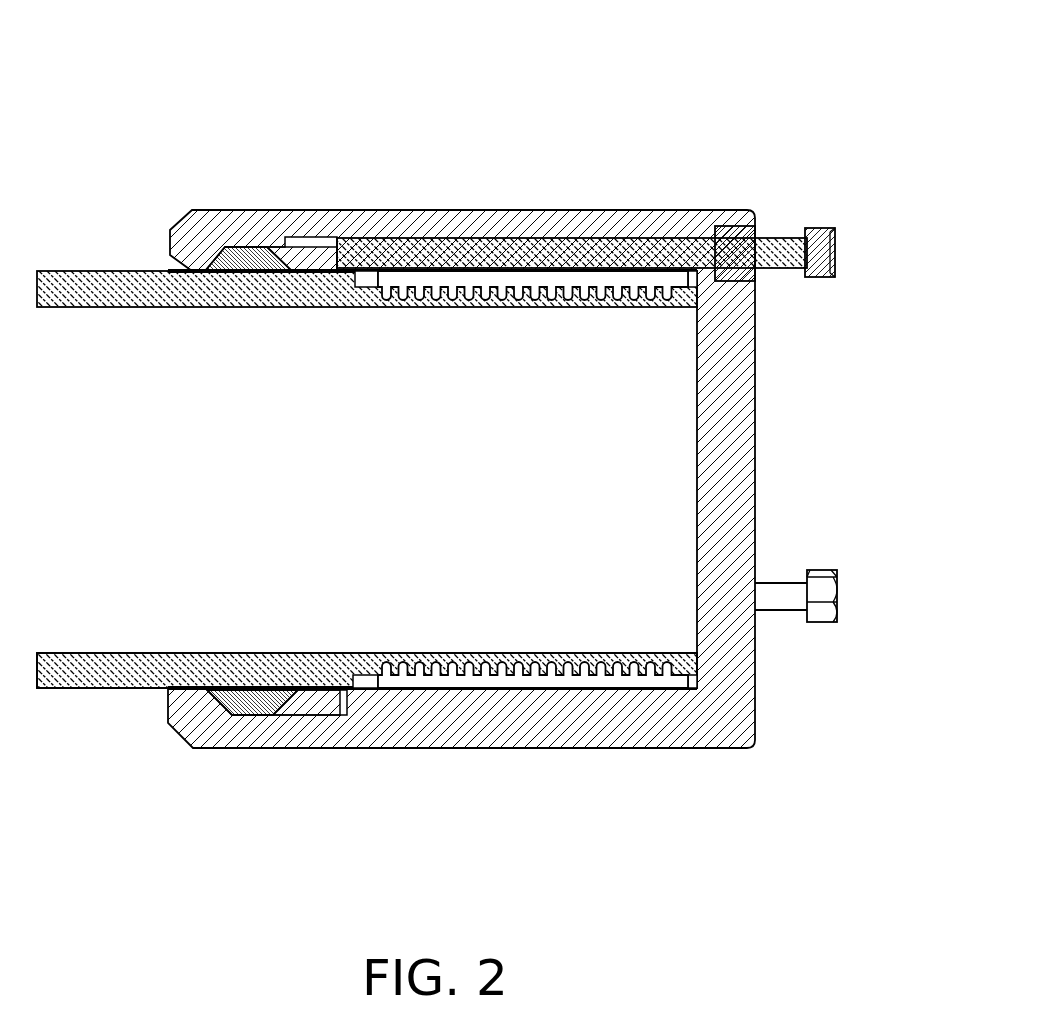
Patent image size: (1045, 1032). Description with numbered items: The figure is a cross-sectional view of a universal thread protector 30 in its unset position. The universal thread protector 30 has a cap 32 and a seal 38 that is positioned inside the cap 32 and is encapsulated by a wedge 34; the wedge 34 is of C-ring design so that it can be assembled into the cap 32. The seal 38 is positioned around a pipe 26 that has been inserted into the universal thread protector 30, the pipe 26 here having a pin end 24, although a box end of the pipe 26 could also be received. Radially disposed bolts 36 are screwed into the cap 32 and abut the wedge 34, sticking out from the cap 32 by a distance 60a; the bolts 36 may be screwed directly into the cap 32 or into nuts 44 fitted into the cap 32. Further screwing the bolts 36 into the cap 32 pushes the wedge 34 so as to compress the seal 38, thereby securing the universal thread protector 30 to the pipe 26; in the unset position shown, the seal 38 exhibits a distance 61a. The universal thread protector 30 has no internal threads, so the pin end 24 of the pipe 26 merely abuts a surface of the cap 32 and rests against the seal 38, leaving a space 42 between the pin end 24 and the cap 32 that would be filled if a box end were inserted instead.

The universal thread protector 30 is at (742, 118).
The cap 32 is at (410, 210).
The pin end 24 is at (522, 655).
The pipe 26 is at (78, 690).
The wedge 34 is at (313, 258).
The bolts 36 is at (838, 250).
The seal 38 is at (245, 262).
The space 42 is at (640, 682).
The nuts 44 is at (757, 272).
The distance 60a is at (787, 215).
The distance 61a is at (240, 245).